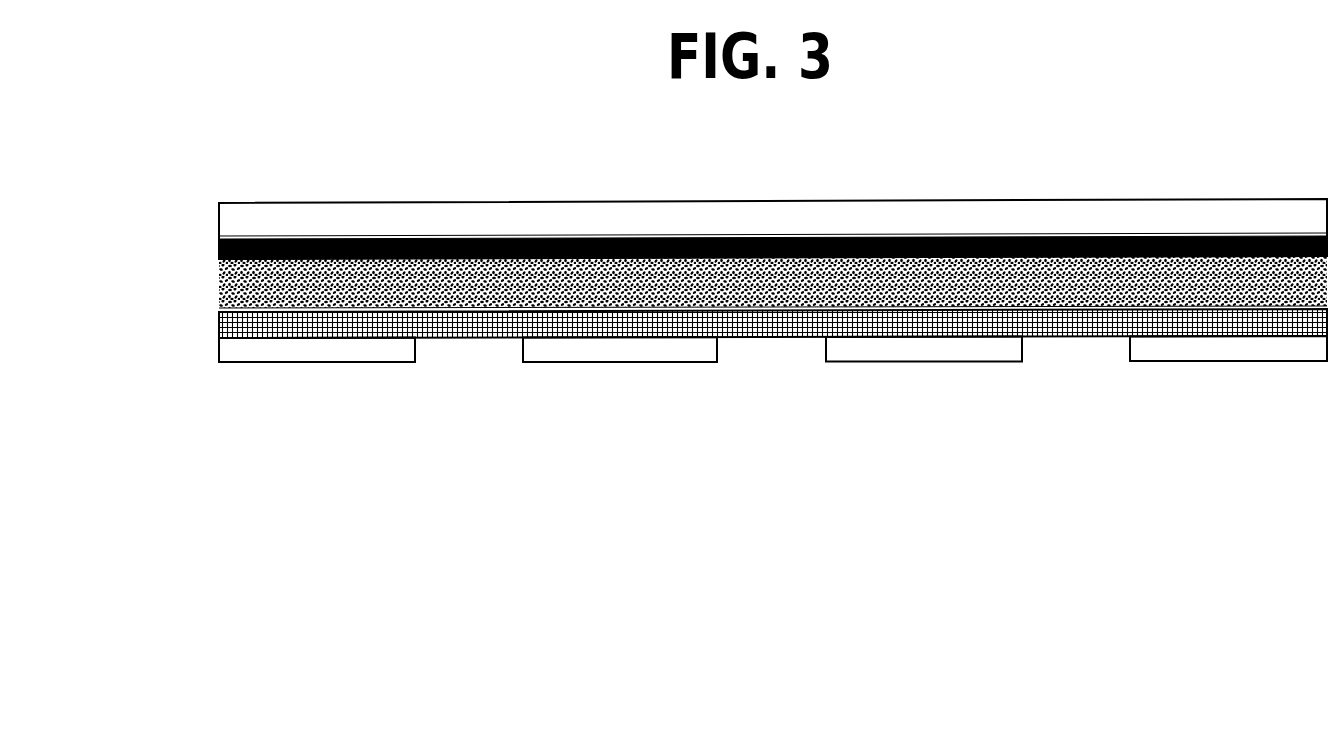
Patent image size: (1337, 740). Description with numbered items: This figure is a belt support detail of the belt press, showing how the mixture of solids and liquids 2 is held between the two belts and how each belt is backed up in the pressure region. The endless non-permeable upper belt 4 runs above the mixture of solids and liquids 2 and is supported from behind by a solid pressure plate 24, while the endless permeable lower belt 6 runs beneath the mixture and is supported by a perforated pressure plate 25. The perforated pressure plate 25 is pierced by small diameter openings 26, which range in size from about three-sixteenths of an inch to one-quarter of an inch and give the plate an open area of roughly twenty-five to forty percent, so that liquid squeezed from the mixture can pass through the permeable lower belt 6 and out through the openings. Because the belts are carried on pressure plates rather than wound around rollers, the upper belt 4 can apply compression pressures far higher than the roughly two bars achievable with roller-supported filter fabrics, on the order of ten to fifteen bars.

The solid pressure plate 24 is at (368, 210).
The upper belt 4 is at (219, 247).
The mixture of solids and liquids 2 is at (219, 284).
The lower belt 6 is at (219, 320).
The perforated pressure plate 25 is at (330, 352).
The small diameter openings 26 is at (478, 355).